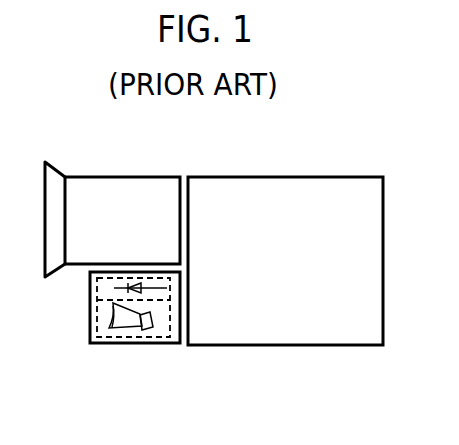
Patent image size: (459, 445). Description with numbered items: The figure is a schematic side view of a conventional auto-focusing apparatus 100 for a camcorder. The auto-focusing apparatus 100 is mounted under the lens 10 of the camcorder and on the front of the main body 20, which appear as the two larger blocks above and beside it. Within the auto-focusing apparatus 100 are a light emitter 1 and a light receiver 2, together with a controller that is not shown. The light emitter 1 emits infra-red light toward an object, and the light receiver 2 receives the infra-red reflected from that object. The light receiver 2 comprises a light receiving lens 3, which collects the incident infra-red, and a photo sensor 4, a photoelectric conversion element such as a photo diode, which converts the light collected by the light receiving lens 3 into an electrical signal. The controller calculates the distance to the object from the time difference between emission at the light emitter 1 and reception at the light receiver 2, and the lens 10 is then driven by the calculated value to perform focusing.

The lens 10 is at (128, 177).
The main body 20 is at (288, 177).
The auto-focusing apparatus 100 is at (105, 347).
The light emitter 1 is at (113, 288).
The light receiver 2 is at (113, 304).
The light receiving lens 3 is at (114, 310).
The photo sensor 4 is at (152, 326).